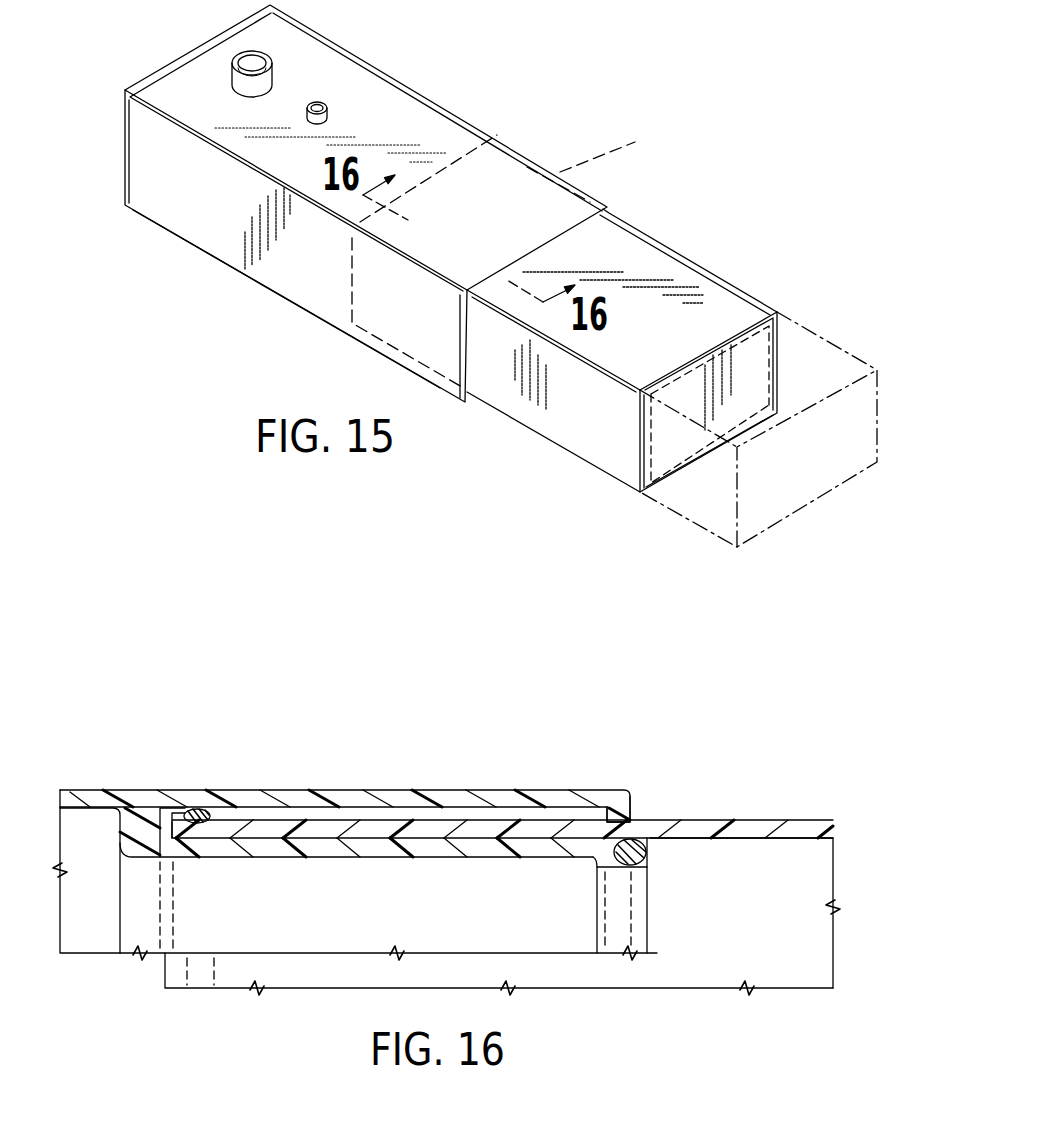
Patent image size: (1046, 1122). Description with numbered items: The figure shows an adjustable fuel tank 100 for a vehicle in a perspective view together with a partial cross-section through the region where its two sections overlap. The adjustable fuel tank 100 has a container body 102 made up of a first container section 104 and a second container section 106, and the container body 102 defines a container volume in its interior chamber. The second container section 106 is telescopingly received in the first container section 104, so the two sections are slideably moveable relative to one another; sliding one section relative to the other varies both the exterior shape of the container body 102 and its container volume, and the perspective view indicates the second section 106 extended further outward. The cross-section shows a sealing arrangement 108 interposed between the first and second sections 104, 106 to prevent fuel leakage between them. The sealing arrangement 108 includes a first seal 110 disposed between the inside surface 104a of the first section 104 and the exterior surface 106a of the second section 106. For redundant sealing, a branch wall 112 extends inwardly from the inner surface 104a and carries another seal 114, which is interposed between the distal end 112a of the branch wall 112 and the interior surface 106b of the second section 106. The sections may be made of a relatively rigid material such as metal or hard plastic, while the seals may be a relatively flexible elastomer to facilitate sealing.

In FIG. 15, the adjustable fuel tank 100 is at (595, 94).
In FIG. 16, the adjustable fuel tank 100 is at (450, 730).
In FIG. 15, the container body 102 is at (241, 272).
In FIG. 15, the first container section 104 is at (182, 198).
In FIG. 16, the first container section 104 is at (97, 790).
In FIG. 16, the inside surface 104a is at (262, 810).
In FIG. 15, the second container section 106 is at (563, 415).
In FIG. 16, the second container section 106 is at (745, 822).
In FIG. 16, the exterior surface 106a is at (345, 822).
In FIG. 16, the interior surface 106b is at (765, 840).
In FIG. 15, the sealing arrangement 108 is at (572, 174).
In FIG. 16, the sealing arrangement 108 is at (472, 795).
In FIG. 16, the first seal 110 is at (197, 808).
In FIG. 16, the branch wall 112 is at (376, 847).
In FIG. 16, the distal end 112a is at (649, 848).
In FIG. 16, the seal 114 is at (632, 850).